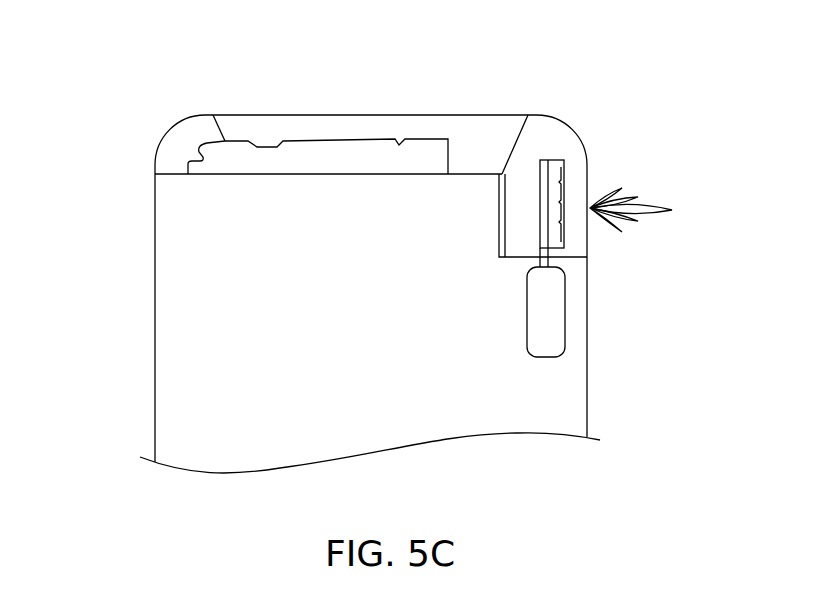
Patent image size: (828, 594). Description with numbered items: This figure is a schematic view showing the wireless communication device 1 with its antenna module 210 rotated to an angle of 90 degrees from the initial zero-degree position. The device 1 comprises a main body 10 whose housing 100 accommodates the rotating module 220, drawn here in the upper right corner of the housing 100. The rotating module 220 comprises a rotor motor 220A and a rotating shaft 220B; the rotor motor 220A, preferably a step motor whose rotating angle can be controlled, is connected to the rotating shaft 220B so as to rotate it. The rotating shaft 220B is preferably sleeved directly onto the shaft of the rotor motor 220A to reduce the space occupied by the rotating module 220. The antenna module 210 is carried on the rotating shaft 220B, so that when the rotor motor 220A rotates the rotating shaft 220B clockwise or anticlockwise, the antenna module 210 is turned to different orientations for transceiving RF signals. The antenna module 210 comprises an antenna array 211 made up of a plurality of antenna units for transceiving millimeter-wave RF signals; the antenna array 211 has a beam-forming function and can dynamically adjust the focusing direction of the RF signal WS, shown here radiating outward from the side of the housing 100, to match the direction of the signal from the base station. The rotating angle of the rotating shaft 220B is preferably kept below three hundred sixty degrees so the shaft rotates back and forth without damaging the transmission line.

The wireless communication device 1 is at (73, 28).
The main body 10 is at (124, 114).
The housing 100 is at (155, 320).
The antenna module 210 is at (553, 170).
The antenna array 211 is at (562, 170).
The rotating module 220 is at (547, 289).
The rotor motor 220A is at (547, 328).
The rotating shaft 220B is at (543, 244).
The RF signal WS is at (643, 210).
The 90 degrees 90 is at (504, 49).